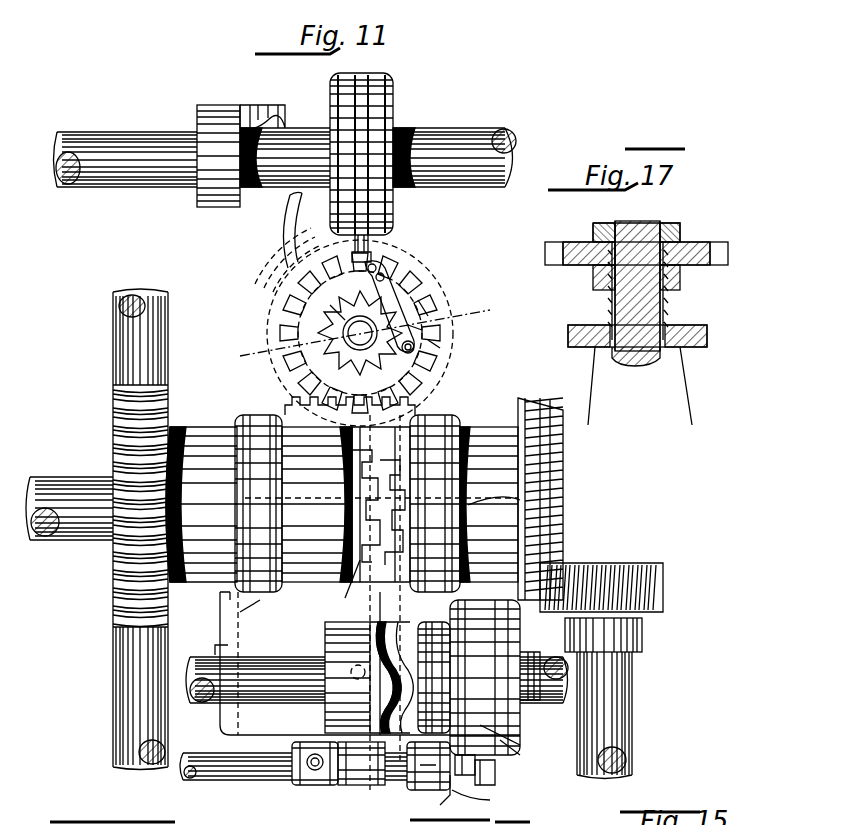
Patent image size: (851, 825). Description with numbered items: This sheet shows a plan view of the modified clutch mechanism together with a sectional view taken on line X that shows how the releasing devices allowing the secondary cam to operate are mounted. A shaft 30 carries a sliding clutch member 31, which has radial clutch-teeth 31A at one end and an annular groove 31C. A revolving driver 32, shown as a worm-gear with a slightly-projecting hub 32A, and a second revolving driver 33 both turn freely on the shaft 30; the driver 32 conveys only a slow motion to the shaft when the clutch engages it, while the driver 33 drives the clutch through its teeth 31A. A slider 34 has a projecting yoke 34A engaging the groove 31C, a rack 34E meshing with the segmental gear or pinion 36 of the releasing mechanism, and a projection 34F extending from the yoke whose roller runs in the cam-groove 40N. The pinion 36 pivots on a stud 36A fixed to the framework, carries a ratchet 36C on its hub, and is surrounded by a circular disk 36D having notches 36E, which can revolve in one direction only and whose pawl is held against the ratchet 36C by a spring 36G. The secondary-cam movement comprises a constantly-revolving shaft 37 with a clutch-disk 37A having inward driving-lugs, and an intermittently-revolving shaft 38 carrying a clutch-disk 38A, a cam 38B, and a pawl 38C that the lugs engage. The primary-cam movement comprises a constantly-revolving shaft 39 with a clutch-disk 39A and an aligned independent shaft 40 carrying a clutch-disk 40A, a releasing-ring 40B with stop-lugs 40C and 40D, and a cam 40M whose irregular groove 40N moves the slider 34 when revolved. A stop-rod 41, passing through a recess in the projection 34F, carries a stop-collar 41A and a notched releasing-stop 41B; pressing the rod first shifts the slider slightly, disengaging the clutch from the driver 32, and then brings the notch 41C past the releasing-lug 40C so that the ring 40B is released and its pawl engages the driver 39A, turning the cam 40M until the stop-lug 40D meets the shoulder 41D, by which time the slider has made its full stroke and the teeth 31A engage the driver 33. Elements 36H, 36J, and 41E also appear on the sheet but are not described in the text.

The shaft 30 is at (70, 492).
The clutch member 31 is at (376, 602).
The radial clutch-teeth 31A is at (520, 500).
The annular groove 31C is at (352, 548).
The revolving driver 32 is at (113, 410).
The hub 32A is at (201, 504).
The revolving driver 33 is at (490, 495).
The slider 34 is at (240, 612).
The yoke 34A is at (345, 598).
The rack 34E is at (300, 404).
The projection 34F is at (370, 770).
The segmental gear 36 is at (432, 368).
The stud 36A is at (345, 335).
The ratchet 36C is at (420, 302).
The circular disk 36D is at (400, 282).
The notches 36E is at (430, 340).
The spring 36G is at (332, 310).
The guide arcs 36H is at (290, 222).
The guide arm 36J is at (352, 258).
The constantly-revolving shaft 37 is at (445, 140).
The clutch-disk 37A is at (380, 112).
The intermittently-revolving shaft 38 is at (112, 152).
The clutch-disk 38A is at (345, 102).
The cam 38B is at (236, 92).
The pawl 38C is at (372, 248).
The constantly-revolving shaft 39 is at (465, 680).
The clutch-disk 39A is at (500, 748).
The shaft 40 is at (377, 680).
The clutch-disk 40A is at (455, 645).
The releasing-ring 40B is at (495, 735).
The stop-lug 40C is at (525, 772).
The stop-lug 40D is at (540, 565).
The cam 40M is at (350, 690).
The cam-groove 40N is at (388, 660).
The stop-rod 41 is at (255, 770).
The stop-collar 41A is at (308, 770).
The notched releasing-stop 41B is at (420, 775).
The notch 41C is at (465, 770).
The shoulder 41D is at (445, 800).
The collar 41E is at (492, 782).
The section line x x X is at (366, 332).